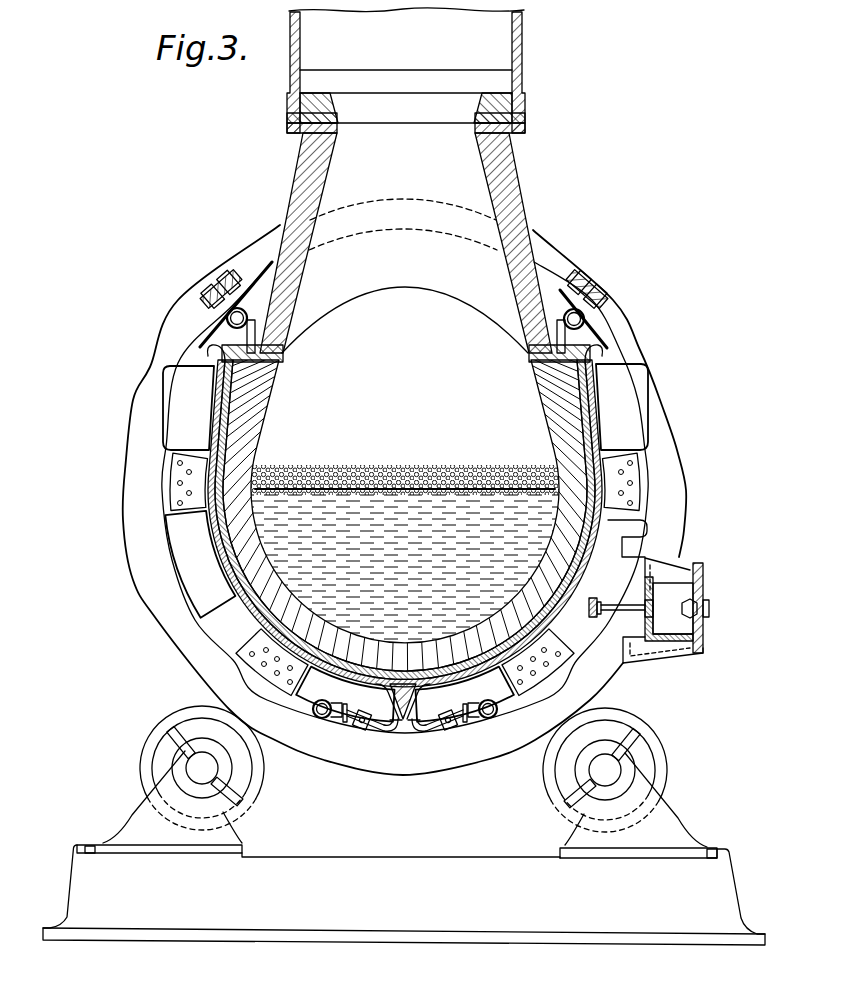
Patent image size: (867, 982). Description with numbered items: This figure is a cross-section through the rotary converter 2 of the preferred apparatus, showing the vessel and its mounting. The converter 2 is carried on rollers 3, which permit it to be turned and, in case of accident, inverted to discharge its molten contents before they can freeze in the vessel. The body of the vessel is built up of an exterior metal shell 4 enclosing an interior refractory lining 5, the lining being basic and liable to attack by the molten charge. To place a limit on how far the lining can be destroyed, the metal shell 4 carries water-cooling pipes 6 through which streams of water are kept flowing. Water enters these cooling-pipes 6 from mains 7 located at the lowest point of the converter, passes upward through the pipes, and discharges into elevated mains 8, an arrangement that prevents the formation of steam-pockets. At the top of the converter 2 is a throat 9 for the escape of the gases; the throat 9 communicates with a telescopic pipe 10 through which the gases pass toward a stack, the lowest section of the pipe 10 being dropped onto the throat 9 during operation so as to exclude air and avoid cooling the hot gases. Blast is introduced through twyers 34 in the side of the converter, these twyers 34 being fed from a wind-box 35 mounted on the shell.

The converter 2 is at (405, 503).
The rollers 3 is at (143, 761).
The exterior metal shell 4 is at (216, 394).
The interior refractory lining 5 is at (215, 416).
The water-cooling pipes 6 is at (212, 436).
The mains 7 is at (321, 720).
The elevated mains 8 is at (602, 319).
The throat 9 is at (406, 247).
The telescopic pipe 10 is at (406, 70).
The twyers 34 is at (586, 617).
The wind-box 35 is at (689, 590).